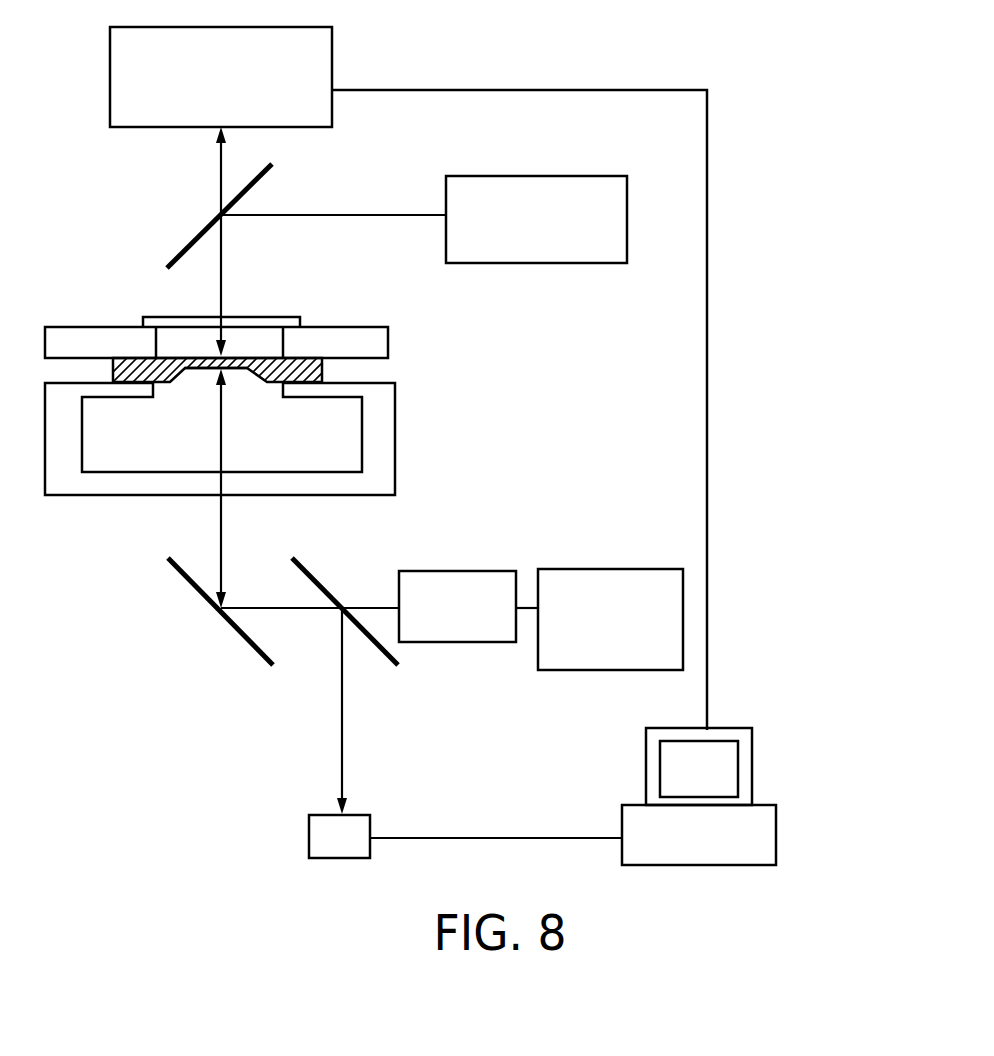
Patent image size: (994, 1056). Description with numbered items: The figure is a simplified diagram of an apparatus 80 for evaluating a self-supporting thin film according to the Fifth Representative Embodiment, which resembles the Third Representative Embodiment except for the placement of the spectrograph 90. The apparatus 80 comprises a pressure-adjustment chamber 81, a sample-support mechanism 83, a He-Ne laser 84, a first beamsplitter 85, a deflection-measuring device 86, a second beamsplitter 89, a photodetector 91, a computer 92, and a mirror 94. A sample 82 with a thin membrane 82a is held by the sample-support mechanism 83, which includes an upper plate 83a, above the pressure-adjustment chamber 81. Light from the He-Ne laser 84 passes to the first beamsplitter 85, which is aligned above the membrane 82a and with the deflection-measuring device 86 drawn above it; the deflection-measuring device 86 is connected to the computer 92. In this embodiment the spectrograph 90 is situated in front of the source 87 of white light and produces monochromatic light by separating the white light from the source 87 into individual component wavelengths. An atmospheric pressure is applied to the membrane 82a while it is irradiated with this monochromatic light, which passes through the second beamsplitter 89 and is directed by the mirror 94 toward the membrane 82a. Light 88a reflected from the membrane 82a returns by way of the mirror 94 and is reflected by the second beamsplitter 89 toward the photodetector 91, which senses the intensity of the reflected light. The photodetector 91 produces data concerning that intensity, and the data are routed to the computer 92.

The apparatus 80 is at (740, 131).
The pressure-adjustment chamber 81 is at (396, 451).
The sample / diaphragm member 82 is at (272, 386).
The membrane 82a is at (210, 369).
The sample-support mechanism 83 is at (380, 347).
The top plate / window 83a is at (288, 312).
The He-Ne laser 84 is at (533, 243).
The first beamsplitter 85 is at (197, 238).
The deflection-measuring device 86 is at (110, 87).
The source of white light 87 is at (598, 575).
The light reflected from the membrane 88a is at (341, 682).
The second beamsplitter 89 is at (318, 582).
The spectrograph 90 is at (465, 580).
The photodetector 91 is at (309, 838).
The computer 92 is at (685, 853).
The mirror 94 is at (242, 635).